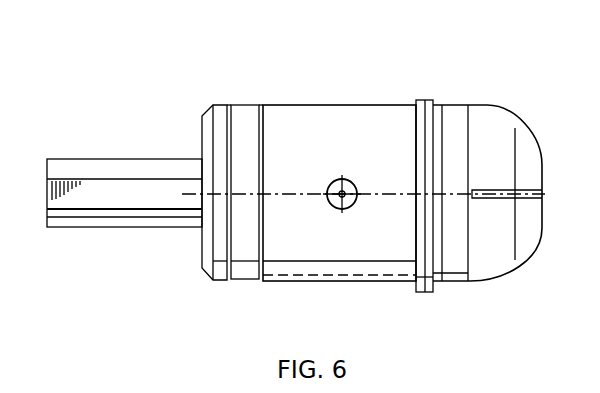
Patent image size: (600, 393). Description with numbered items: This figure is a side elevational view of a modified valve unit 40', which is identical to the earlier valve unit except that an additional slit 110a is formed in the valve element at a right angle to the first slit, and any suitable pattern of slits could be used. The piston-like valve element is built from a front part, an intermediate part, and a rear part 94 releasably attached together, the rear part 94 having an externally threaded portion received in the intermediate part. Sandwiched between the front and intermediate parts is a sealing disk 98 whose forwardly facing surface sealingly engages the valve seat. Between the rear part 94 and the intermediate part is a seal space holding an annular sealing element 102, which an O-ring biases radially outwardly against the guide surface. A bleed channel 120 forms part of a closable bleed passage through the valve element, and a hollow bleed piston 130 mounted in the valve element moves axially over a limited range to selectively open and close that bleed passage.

The valve unit 40' is at (405, 147).
The rear part 94 is at (215, 271).
The sealing disk 98 is at (424, 293).
The annular sealing element 102 is at (242, 273).
The additional slit 110a is at (528, 199).
The bleed channel 120 is at (335, 206).
The bleed piston 130 is at (150, 229).